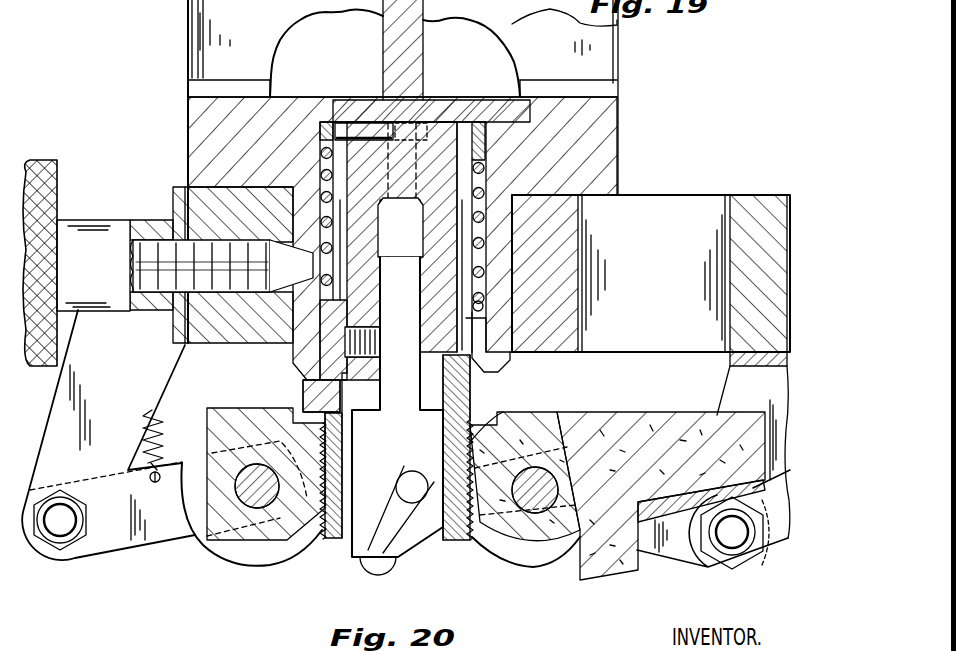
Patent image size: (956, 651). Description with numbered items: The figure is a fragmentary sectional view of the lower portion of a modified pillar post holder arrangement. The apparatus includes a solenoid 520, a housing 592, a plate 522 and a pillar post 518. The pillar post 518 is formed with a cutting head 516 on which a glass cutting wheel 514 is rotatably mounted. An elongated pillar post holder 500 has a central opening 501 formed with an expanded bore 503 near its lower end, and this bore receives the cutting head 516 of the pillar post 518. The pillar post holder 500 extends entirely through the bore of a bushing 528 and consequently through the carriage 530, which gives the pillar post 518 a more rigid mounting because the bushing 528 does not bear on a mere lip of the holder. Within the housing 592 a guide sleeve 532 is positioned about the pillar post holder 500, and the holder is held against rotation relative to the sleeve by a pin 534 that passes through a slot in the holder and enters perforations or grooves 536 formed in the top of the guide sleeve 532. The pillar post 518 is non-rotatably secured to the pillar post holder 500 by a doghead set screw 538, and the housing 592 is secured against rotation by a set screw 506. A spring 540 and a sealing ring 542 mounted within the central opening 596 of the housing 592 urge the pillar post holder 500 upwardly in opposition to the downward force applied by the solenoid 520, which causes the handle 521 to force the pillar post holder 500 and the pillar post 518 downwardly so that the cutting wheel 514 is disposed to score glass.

The handle 521 is at (410, 28).
The solenoid 520 is at (490, 62).
The pin 534 is at (363, 120).
The perforations or grooves in top of guide sleeve 536 is at (333, 117).
The sealing ring 542 is at (487, 137).
The spring 540 is at (480, 170).
The set screw 506 is at (99, 220).
The plate 522 is at (745, 207).
The central opening 501 is at (413, 233).
The housing 592 is at (492, 284).
The central opening of housing 596 is at (476, 300).
The doghead set screw 538 is at (347, 342).
The pillar post 518 is at (390, 395).
The guide sleeve 532 is at (487, 357).
The bushing 528 is at (500, 417).
The pillar post holder 500 is at (437, 393).
The carriage 530 is at (250, 543).
The expanded bore 503 is at (368, 512).
The glass cutting wheel 514 is at (376, 573).
The cutting head 516 is at (423, 528).